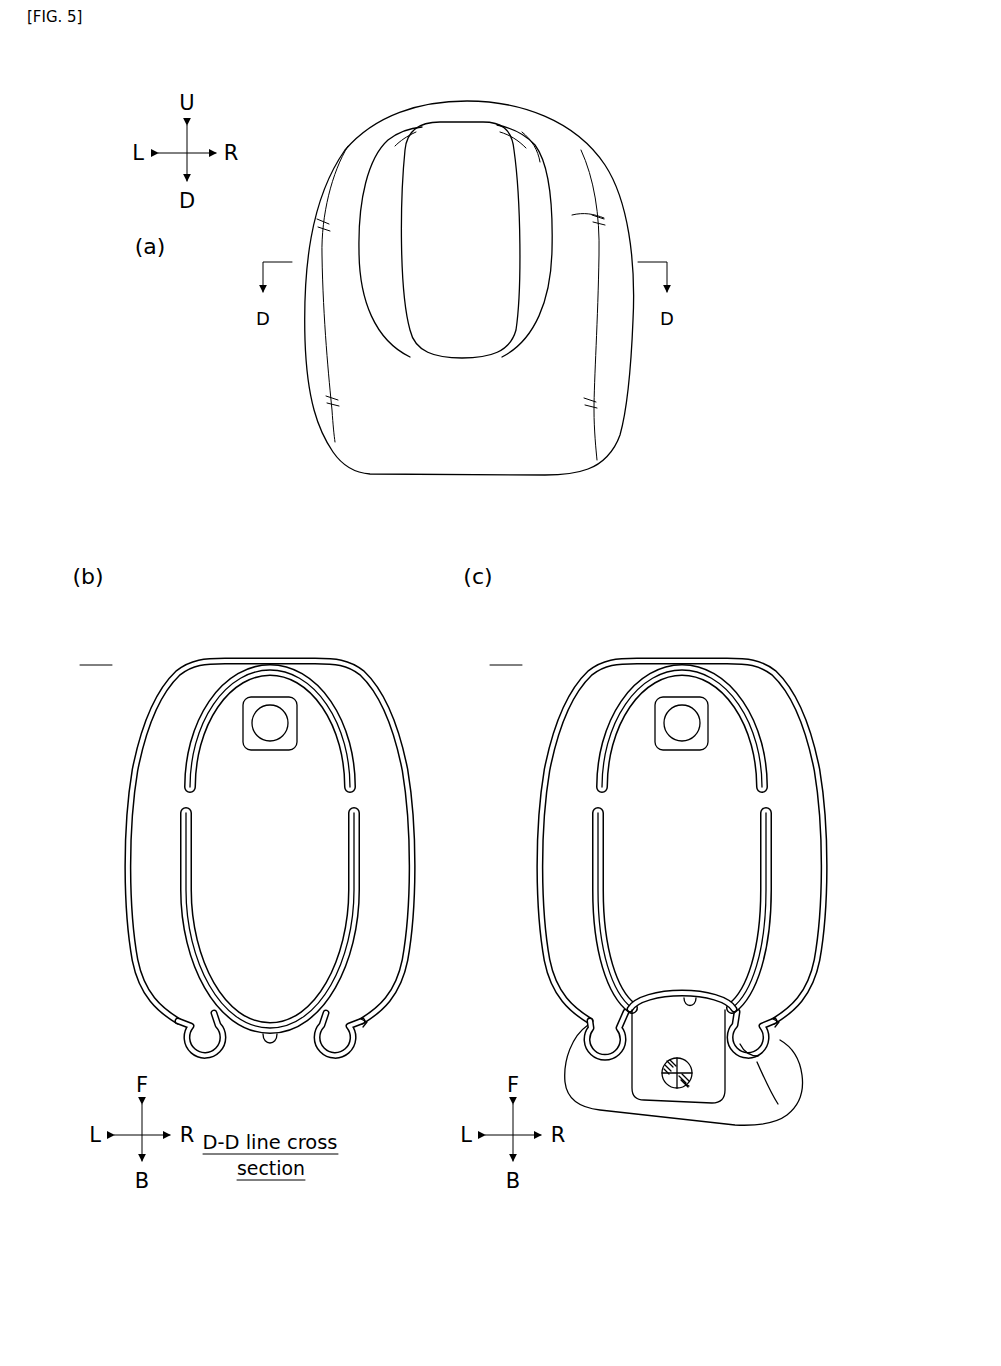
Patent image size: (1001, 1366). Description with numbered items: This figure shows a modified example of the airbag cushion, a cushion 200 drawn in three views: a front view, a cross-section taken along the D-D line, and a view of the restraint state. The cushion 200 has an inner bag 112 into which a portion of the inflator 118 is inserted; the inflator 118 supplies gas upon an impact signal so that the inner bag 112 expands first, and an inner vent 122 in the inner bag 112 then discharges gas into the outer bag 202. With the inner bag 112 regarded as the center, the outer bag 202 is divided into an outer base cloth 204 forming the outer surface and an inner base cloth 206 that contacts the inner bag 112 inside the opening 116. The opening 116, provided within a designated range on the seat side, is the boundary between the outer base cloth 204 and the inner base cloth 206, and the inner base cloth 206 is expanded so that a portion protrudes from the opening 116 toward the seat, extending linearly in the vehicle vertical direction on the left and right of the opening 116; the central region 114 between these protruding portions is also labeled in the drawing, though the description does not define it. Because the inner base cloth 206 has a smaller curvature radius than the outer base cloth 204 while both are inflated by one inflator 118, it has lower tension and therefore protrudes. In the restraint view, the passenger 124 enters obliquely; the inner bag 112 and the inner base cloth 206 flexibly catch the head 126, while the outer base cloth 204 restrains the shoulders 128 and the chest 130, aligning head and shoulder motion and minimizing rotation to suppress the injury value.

The cushion 200 is at (304, 123).
The inner bag 112 is at (410, 132).
The head receiving portion 114 is at (437, 152).
The opening 116 is at (512, 130).
The inflator 118 is at (272, 712).
The inner vent 122 is at (360, 790).
The passenger 124 is at (730, 1126).
The head 126 is at (693, 1100).
The shoulders 128 is at (786, 1104).
The chest 130 is at (776, 1043).
The outer bag 202 is at (560, 156).
The outer base cloth 204 is at (581, 218).
The inner base cloth 206 is at (537, 154).